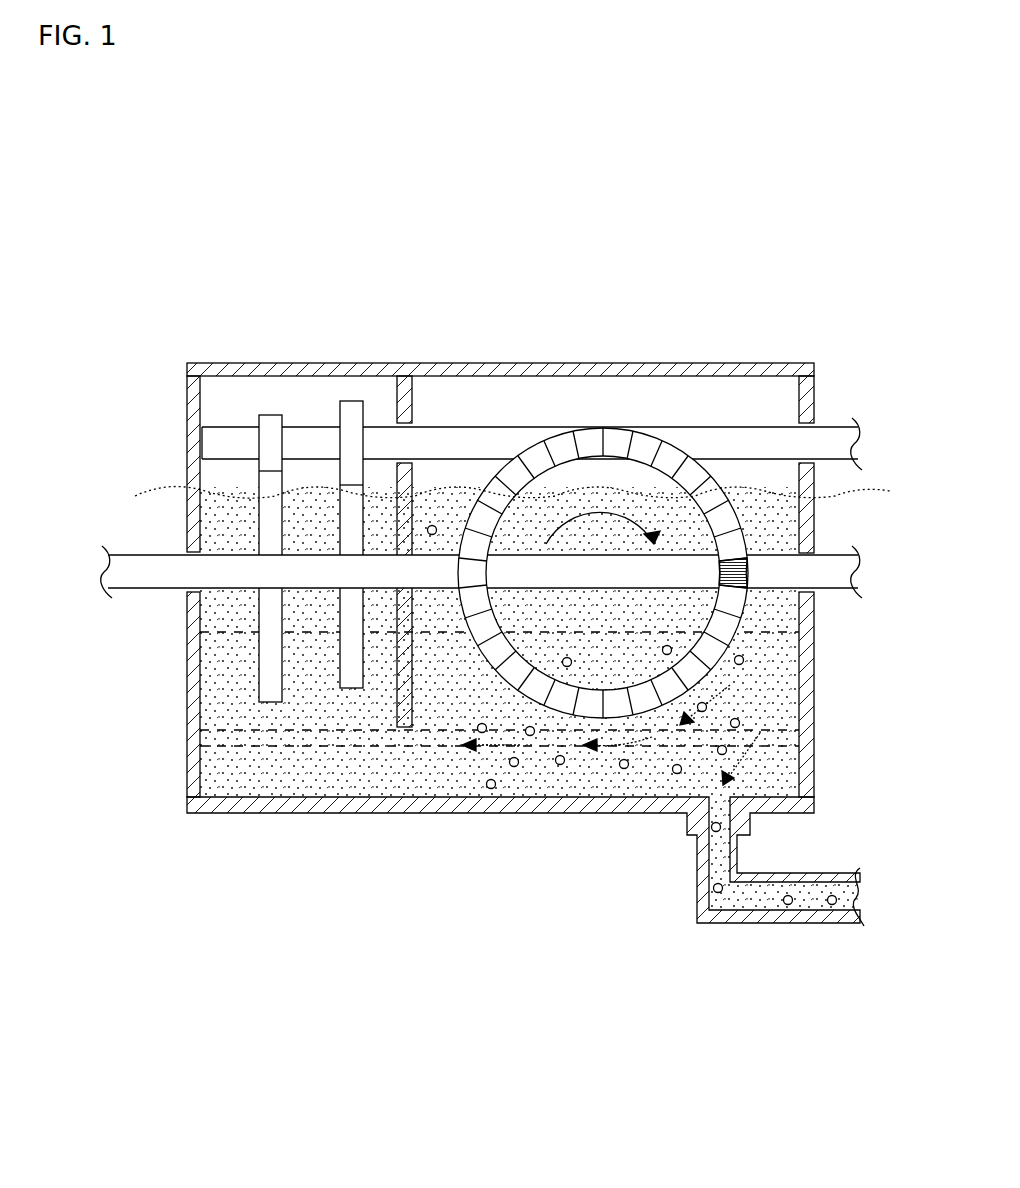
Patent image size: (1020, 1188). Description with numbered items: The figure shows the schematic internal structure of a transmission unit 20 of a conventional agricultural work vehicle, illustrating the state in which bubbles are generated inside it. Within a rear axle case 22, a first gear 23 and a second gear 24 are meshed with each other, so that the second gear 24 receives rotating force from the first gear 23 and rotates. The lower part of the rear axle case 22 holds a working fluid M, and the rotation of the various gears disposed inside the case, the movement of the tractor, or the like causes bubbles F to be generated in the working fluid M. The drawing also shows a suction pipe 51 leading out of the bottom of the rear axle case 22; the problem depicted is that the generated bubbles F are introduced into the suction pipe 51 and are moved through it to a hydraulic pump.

The transmission unit 20 is at (172, 302).
The rear axle case 22 is at (262, 815).
The first gear 23 is at (839, 582).
The second gear 24 is at (730, 684).
The suction pipe 51 is at (745, 925).
The working fluid M is at (524, 489).
The bubbles F is at (760, 750).